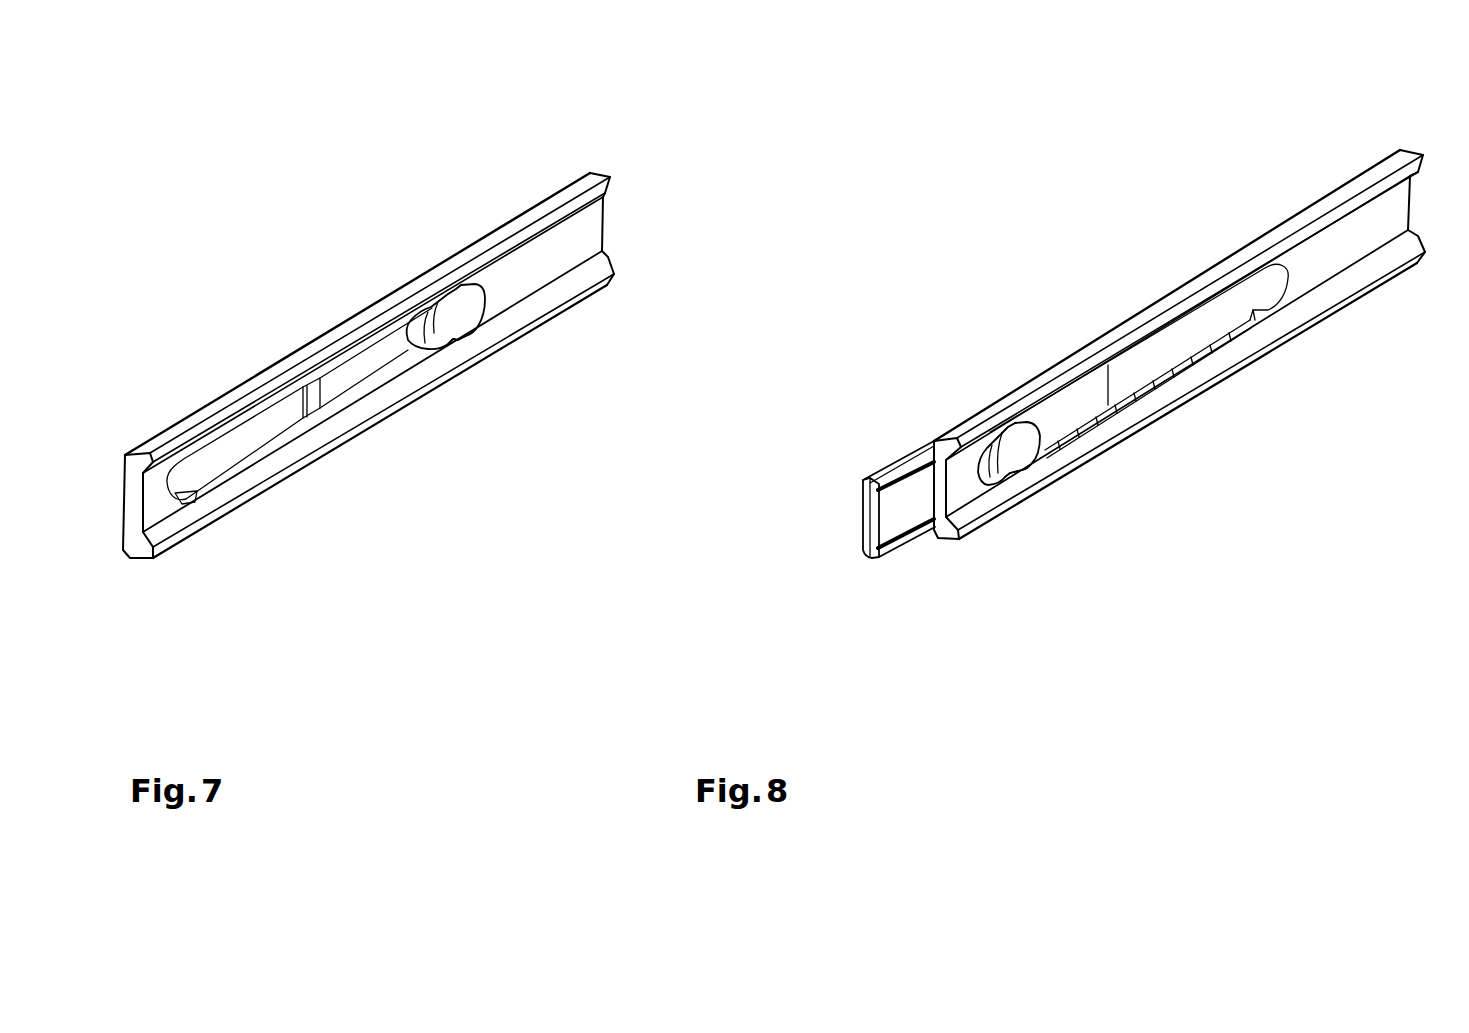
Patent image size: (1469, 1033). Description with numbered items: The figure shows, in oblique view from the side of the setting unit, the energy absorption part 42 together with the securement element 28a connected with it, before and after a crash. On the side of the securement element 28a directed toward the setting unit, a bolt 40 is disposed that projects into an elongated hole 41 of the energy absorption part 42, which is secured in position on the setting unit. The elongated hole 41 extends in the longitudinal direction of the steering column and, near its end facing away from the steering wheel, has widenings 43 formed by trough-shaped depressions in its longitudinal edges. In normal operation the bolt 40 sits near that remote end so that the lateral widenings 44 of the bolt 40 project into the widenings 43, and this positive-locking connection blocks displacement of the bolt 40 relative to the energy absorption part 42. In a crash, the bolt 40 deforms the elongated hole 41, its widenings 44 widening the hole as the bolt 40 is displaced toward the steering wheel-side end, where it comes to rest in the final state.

In FIG. 7, the securement element 28a is at (360, 365).
In FIG. 8, the securement element 28a is at (894, 507).
In FIG. 7, the bolt 40 is at (457, 317).
In FIG. 8, the bolt 40 is at (1012, 452).
In FIG. 7, the elongated hole 41 is at (262, 428).
In FIG. 8, the elongated hole 41 is at (1168, 347).
In FIG. 7, the energy absorption part 42 is at (575, 239).
In FIG. 8, the energy absorption part 42 is at (1372, 238).
In FIG. 8, the widenings of the elongated hole 43 is at (1257, 318).
In FIG. 7, the lateral widenings of the bolt 44 is at (455, 296).
In FIG. 8, the lateral widenings of the bolt 44 is at (1010, 430).